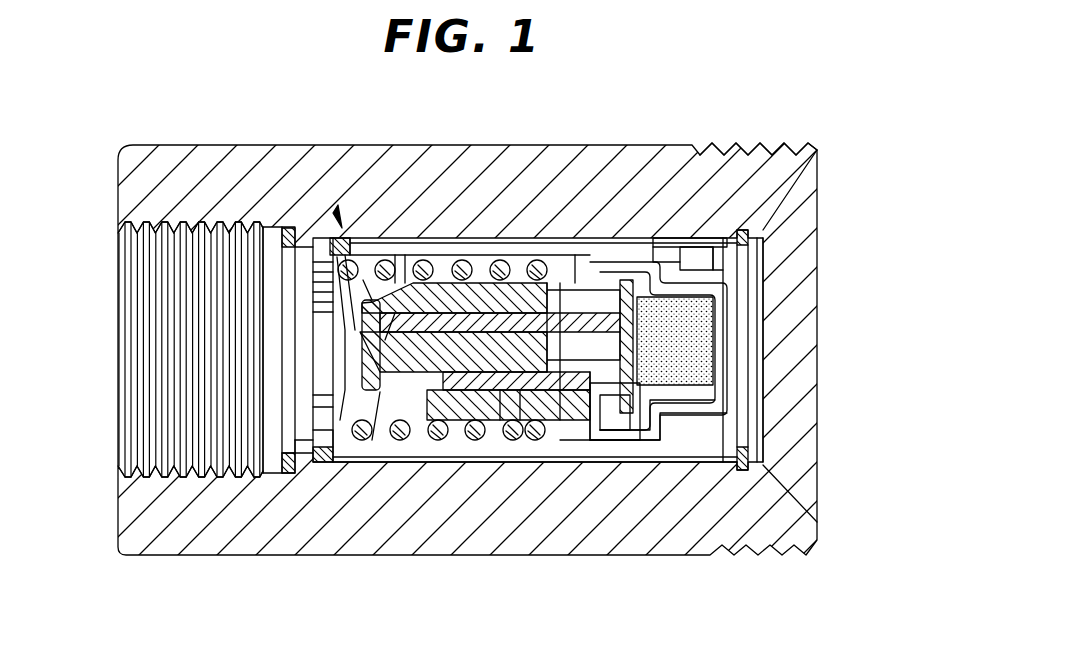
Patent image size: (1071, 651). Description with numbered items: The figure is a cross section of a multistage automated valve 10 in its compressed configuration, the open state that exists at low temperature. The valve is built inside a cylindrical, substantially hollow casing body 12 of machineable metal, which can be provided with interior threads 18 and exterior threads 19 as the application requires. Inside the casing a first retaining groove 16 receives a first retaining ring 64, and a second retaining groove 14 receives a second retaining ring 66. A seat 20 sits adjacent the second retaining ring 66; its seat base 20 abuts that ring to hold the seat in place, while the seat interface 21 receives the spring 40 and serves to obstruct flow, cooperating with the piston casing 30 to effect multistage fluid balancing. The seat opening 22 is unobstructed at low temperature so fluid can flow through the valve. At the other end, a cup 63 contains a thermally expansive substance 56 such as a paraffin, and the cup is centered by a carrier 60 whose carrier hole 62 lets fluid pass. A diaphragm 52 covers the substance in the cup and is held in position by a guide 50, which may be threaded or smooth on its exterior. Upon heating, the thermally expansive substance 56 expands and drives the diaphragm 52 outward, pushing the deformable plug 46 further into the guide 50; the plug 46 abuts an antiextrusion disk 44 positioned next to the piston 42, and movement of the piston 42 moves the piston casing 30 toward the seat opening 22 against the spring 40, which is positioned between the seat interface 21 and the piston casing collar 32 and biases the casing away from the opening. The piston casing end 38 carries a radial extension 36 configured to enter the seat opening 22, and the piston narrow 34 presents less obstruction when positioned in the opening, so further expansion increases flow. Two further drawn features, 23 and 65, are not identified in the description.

The automated valve 10 is at (843, 567).
The casing body 12 is at (410, 160).
The second retaining groove 14 is at (286, 228).
The first retaining groove 16 is at (741, 235).
The interior threads 18 is at (190, 338).
The exterior threads 19 is at (795, 145).
The seat 20 is at (293, 240).
The seat interface 21 is at (330, 425).
The seat opening 22 is at (287, 440).
The cup flange 23 is at (318, 465).
The piston casing 30 is at (512, 355).
The piston casing collar 32 is at (560, 410).
The piston narrow 34 is at (396, 310).
The radial extension 36 is at (372, 303).
The piston casing end 38 is at (317, 367).
The spring 40 is at (507, 258).
The piston 42 is at (520, 420).
The antiextrusion disk 44 is at (545, 337).
The plug 46 is at (583, 335).
The guide 50 is at (462, 380).
The diaphragm 52 is at (633, 330).
The thermally expansive substance 56 is at (700, 343).
The carrier 60 is at (642, 255).
The carrier hole 62 is at (695, 255).
The cup 63 is at (678, 400).
The first retaining ring 64 is at (760, 457).
The cap shoulder 65 is at (587, 403).
The second retaining ring 66 is at (287, 445).